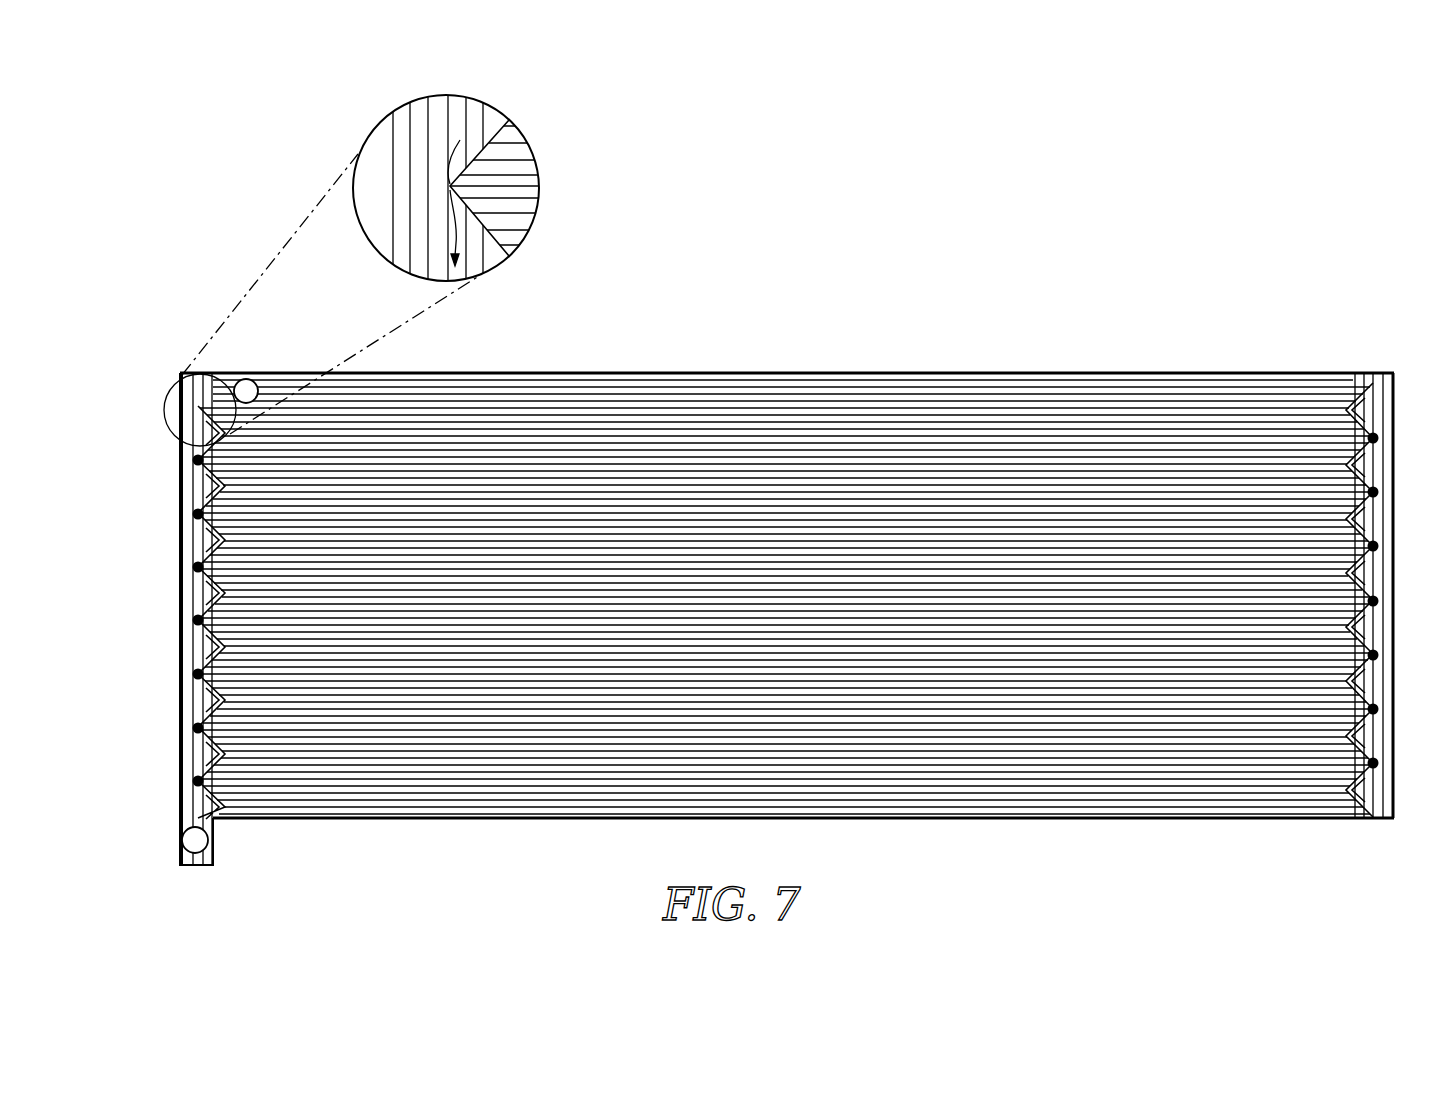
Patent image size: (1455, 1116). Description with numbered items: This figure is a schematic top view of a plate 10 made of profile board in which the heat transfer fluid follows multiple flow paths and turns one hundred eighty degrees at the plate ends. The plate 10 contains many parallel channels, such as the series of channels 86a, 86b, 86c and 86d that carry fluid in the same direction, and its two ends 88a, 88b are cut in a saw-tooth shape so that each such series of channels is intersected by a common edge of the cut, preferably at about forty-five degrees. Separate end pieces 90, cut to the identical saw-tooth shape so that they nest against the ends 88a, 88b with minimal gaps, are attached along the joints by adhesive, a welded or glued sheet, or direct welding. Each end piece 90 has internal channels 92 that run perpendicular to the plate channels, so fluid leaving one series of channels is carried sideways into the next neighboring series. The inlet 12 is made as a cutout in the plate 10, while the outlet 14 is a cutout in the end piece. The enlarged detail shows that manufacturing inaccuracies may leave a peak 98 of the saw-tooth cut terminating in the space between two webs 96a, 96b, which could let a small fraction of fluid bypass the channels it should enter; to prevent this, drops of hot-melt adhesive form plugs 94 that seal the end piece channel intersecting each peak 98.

The plate 10 is at (974, 354).
The inlet 12 is at (238, 371).
The outlet 14 is at (189, 845).
The channel 86a is at (555, 380).
The channel 86b is at (623, 387).
The channel 86c is at (667, 392).
The channel 86d is at (717, 400).
The end of plate 88a is at (1385, 562).
The end of plate 88b is at (208, 780).
The end piece 90 is at (1367, 453).
The internal channel 92 is at (1367, 512).
The plug 94 is at (1367, 660).
The web 96a is at (447, 116).
The web 96b is at (464, 116).
The peak of saw-tooth cut 98 is at (488, 173).